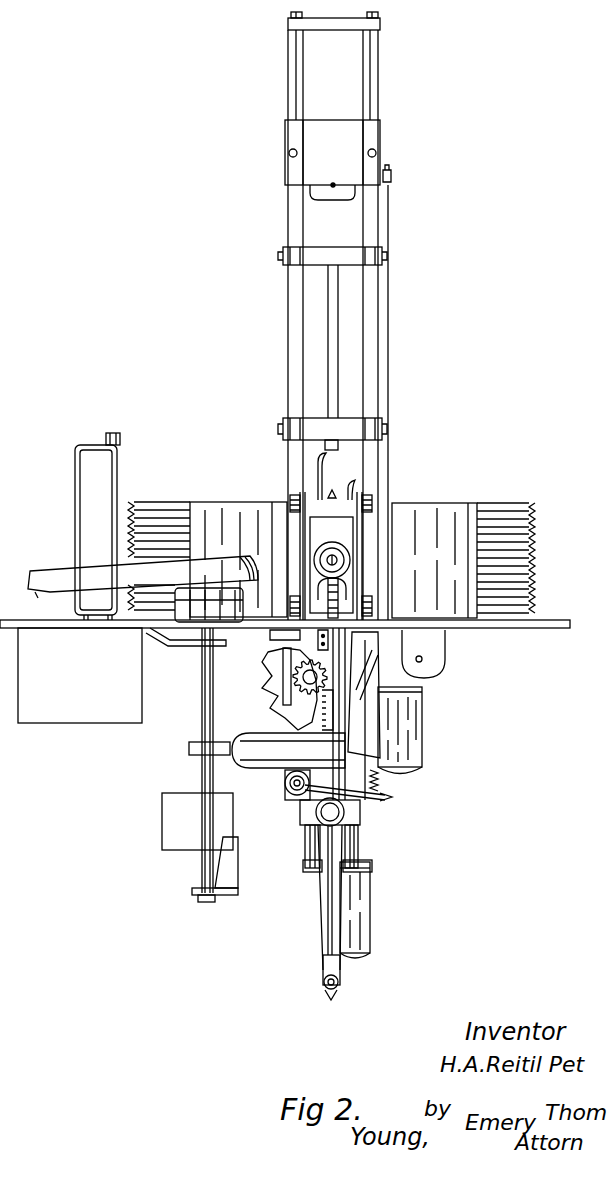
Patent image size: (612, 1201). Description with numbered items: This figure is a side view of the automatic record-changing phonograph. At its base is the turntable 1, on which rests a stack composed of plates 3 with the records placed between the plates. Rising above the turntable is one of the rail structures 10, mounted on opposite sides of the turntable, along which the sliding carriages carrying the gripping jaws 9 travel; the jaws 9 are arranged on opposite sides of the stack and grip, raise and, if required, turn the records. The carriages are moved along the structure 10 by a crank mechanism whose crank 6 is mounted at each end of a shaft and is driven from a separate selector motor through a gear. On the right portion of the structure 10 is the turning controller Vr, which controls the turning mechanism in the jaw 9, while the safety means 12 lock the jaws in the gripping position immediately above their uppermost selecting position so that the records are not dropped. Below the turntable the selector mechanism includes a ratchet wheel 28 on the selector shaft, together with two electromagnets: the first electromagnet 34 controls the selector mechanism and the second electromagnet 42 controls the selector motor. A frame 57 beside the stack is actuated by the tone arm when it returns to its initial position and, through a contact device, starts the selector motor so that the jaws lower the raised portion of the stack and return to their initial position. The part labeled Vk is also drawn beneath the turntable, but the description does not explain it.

The rail structure 10 is at (370, 62).
The turning controller Vr is at (375, 133).
The safety means 12 is at (366, 256).
The frame 57 is at (78, 472).
The gripping jaw 9 is at (430, 512).
The plate 3 is at (526, 508).
The turntable 1 is at (285, 619).
The cam follower plate Vk is at (440, 657).
The ratchet wheel 28 is at (280, 686).
The electromagnet 34 is at (412, 732).
The crank 6 is at (323, 903).
The electromagnet 42 is at (365, 916).